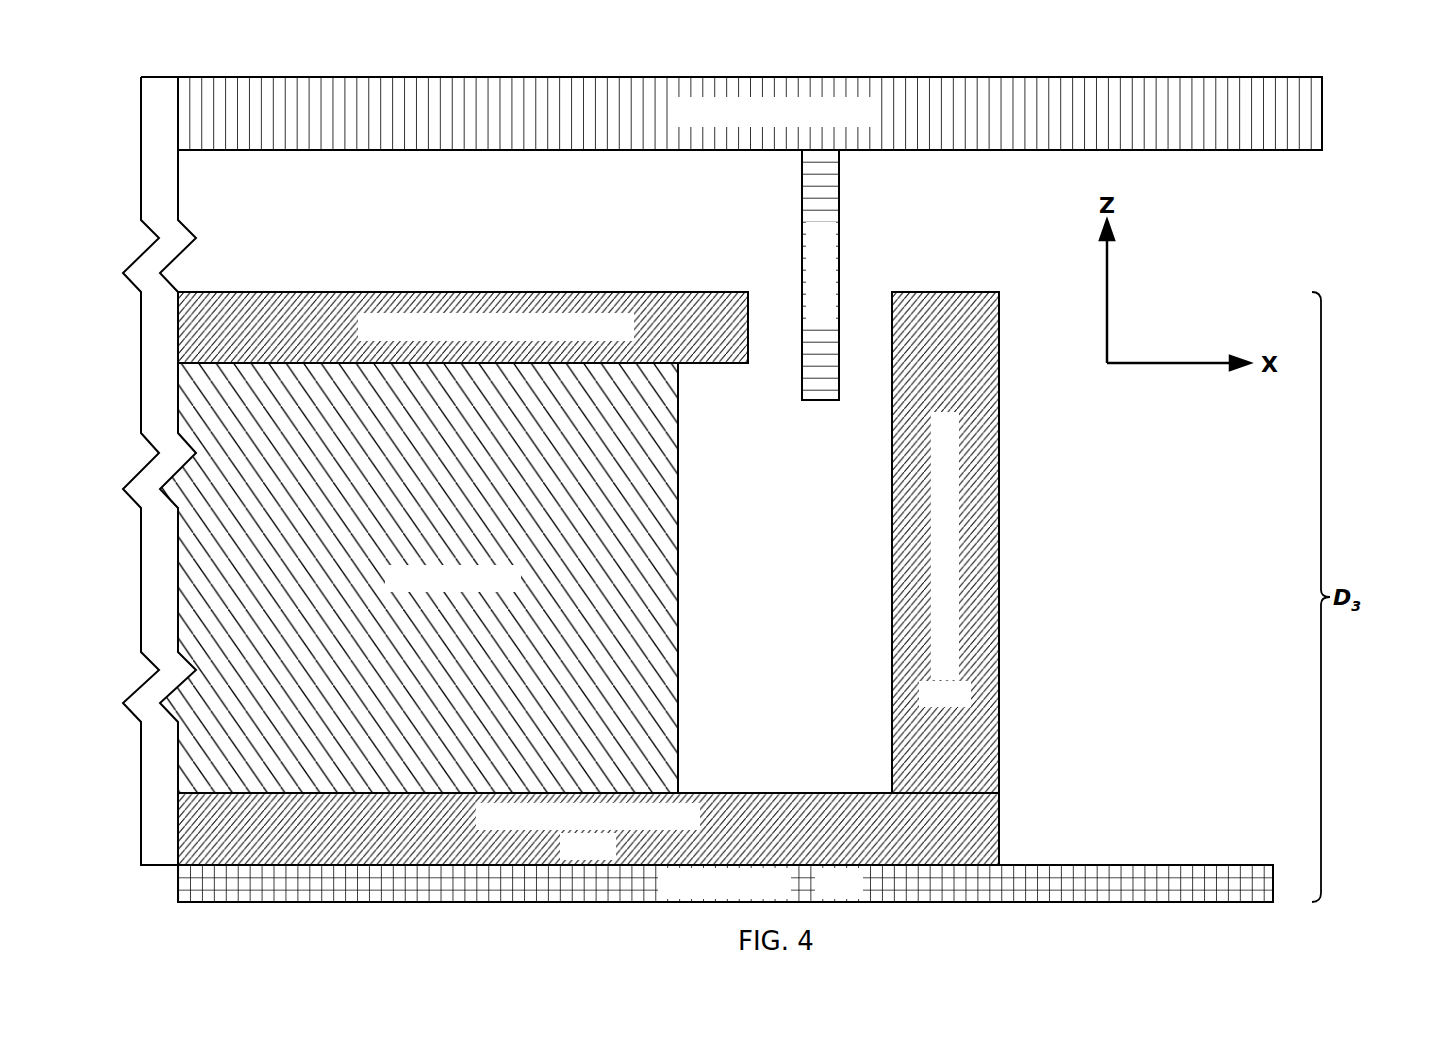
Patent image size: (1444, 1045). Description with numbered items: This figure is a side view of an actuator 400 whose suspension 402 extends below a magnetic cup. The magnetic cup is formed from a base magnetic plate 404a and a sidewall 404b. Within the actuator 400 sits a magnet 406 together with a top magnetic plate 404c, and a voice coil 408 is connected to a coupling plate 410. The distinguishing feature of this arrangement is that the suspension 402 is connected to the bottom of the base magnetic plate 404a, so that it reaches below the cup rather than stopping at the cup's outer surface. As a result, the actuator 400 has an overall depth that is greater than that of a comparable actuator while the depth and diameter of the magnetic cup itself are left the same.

The actuator 400 is at (1396, 70).
The suspension 402 is at (725, 883).
The base magnetic plate 404a is at (588, 829).
The sidewall 404b is at (945, 542).
The top magnetic plate 404c is at (463, 327).
The magnet 406 is at (419, 578).
The voice coil 408 is at (839, 219).
The coupling plate 410 is at (750, 113).